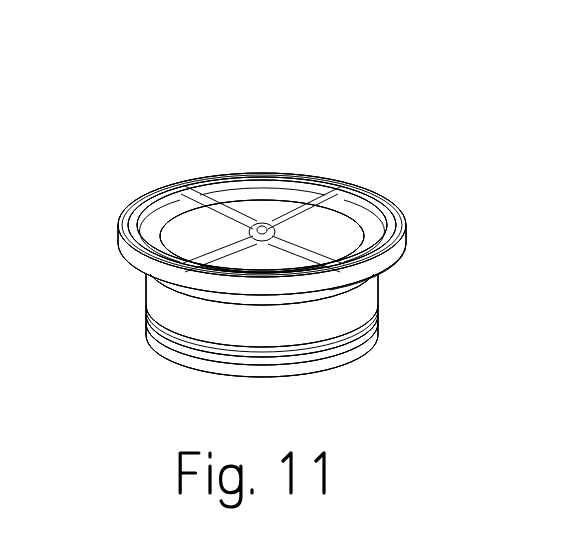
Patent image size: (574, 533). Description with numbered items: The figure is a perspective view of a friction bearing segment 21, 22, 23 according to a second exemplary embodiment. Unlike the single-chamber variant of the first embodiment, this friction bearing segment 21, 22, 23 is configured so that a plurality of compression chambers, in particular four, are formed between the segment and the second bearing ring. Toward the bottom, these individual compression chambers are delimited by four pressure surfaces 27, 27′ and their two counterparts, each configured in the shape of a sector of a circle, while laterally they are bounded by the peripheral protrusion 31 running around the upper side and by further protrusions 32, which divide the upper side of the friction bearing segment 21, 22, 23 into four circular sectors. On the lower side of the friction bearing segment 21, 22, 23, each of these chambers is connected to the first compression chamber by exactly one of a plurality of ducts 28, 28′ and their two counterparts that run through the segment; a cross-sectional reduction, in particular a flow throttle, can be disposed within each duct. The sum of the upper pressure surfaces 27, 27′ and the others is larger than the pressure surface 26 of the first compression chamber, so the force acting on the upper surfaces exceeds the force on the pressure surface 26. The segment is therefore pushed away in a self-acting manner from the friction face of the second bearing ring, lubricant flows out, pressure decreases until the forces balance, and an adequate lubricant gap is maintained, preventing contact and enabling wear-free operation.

The friction bearing segment 21 is at (453, 37).
The friction bearing segment 22 is at (262, 275).
The friction bearing segment 23 is at (262, 275).
The pressure surface 26 is at (213, 390).
The pressure surface 27 is at (248, 197).
The pressure surface 27′ is at (162, 231).
The duct 28 is at (268, 215).
The duct 28′ is at (202, 233).
The peripheral protrusion 31 is at (382, 245).
The protrusion 32 is at (66, 58).